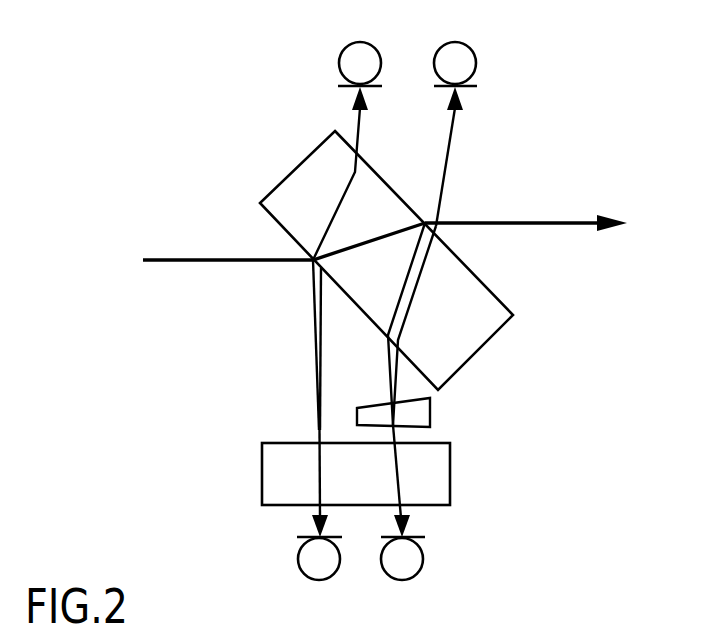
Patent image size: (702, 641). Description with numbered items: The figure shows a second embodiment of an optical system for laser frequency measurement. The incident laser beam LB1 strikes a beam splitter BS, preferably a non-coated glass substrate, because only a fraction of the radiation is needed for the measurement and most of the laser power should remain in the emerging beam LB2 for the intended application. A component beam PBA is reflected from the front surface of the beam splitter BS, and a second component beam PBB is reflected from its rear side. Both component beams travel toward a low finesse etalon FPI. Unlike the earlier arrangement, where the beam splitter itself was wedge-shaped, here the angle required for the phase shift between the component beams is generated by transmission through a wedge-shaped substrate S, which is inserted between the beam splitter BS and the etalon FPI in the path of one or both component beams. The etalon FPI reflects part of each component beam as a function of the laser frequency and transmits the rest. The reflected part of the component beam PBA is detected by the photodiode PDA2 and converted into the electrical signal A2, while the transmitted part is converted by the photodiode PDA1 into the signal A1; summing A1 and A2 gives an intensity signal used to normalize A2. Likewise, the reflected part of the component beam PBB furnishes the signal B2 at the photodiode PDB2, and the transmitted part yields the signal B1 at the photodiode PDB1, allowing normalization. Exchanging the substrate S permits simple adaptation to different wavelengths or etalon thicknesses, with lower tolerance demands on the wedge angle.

The beam splitter BS is at (397, 260).
The incident laser beam LB1 is at (284, 263).
The emerging beam LB2 is at (526, 241).
The electrical signal A2 is at (344, 133).
The electrical signal B2 is at (454, 116).
The photodiode PDA2 is at (312, 64).
The photodiode PDB2 is at (498, 64).
The component beam PBA is at (288, 398).
The component beam PBB is at (383, 380).
The wedge-shaped substrate S is at (409, 414).
The low finesse etalon FPI is at (384, 474).
The photodiode PDA1 is at (269, 549).
The photodiode PDB1 is at (445, 549).
The electrical signal A1 is at (319, 600).
The electrical signal B1 is at (405, 600).